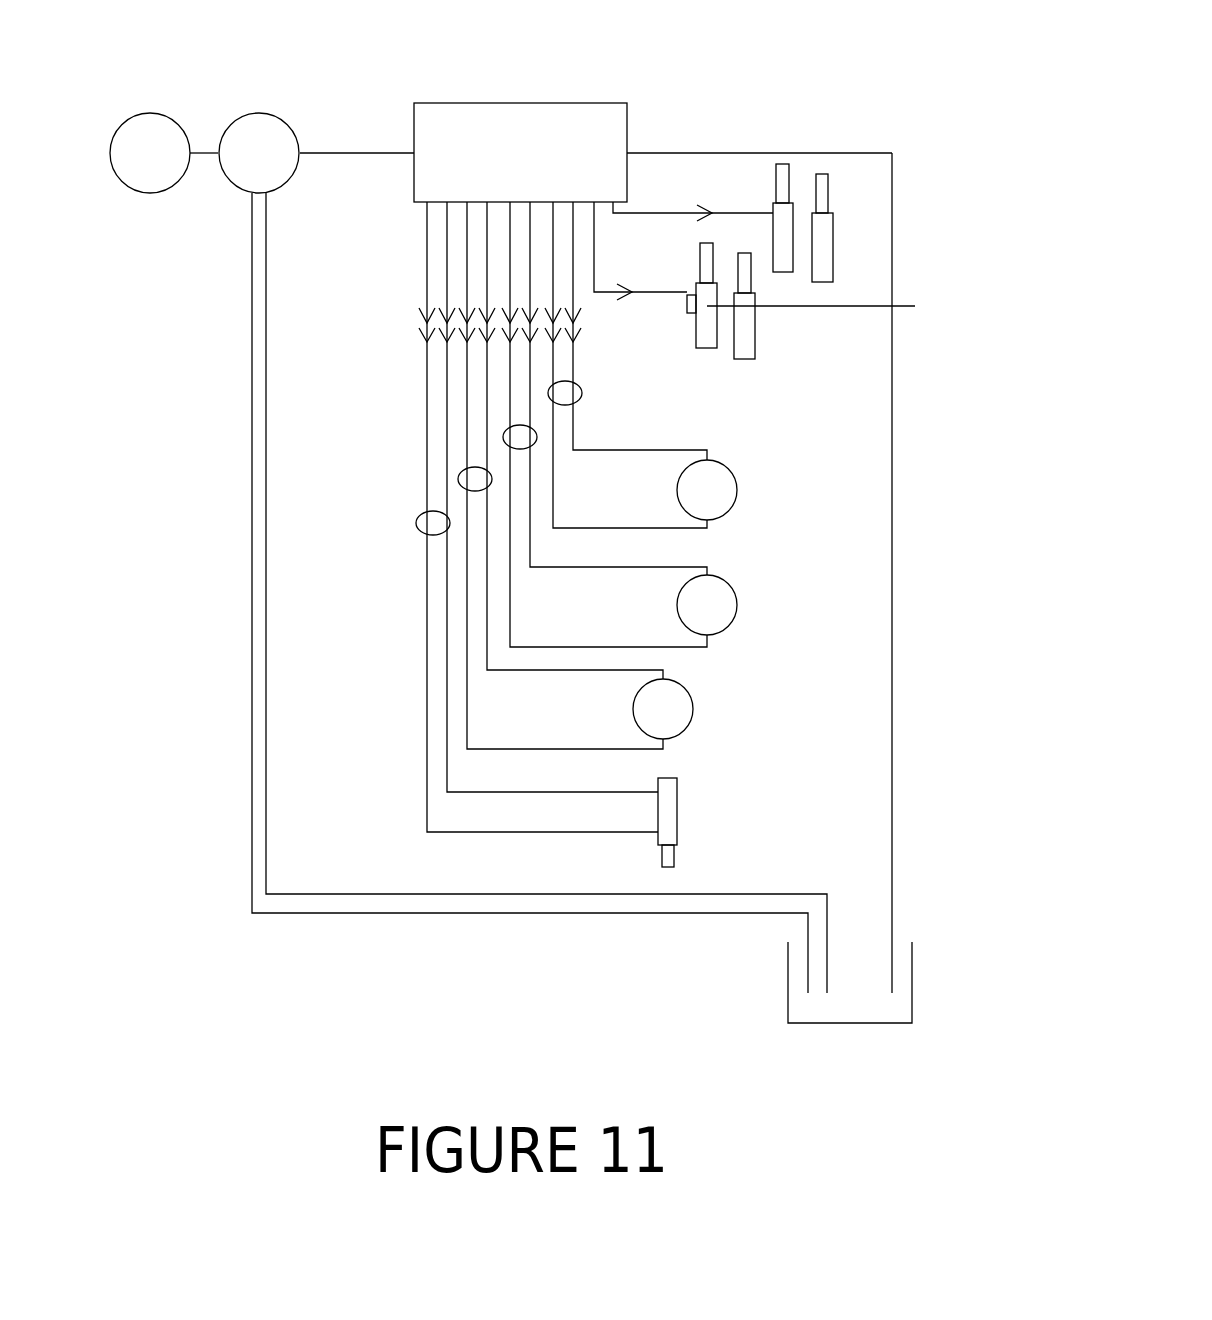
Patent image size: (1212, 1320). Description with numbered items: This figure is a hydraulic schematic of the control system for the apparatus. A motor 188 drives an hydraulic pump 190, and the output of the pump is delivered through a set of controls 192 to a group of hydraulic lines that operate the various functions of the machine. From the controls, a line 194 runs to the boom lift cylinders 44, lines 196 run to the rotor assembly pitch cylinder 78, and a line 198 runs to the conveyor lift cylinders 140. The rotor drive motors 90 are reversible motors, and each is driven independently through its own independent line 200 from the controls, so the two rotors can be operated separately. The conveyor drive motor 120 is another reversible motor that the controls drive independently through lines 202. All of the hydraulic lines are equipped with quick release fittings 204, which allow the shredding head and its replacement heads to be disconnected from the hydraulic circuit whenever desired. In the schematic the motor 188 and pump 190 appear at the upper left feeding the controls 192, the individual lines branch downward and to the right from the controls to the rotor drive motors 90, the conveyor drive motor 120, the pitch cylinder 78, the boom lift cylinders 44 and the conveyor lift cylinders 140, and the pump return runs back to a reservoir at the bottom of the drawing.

The motor 188 is at (191, 96).
The hydraulic pump 190 is at (299, 96).
The controls 192 is at (529, 101).
The line 194 is at (748, 118).
The boom lift cylinders 44 is at (862, 191).
The line 198 is at (643, 251).
The conveyor lift cylinders 140 is at (842, 301).
The quick release fittings 204 is at (573, 345).
The independent lines 200 is at (578, 380).
The lines 202 is at (461, 467).
The lines 196 is at (420, 511).
The rotor drive motors 90 is at (760, 533).
The conveyor drive motor 120 is at (731, 695).
The rotor assembly pitch cylinder 78 is at (724, 819).